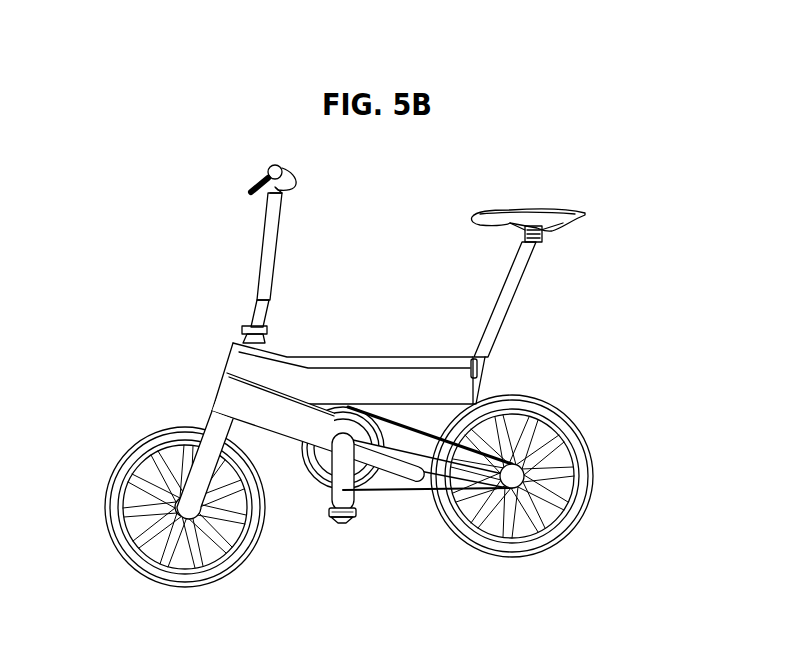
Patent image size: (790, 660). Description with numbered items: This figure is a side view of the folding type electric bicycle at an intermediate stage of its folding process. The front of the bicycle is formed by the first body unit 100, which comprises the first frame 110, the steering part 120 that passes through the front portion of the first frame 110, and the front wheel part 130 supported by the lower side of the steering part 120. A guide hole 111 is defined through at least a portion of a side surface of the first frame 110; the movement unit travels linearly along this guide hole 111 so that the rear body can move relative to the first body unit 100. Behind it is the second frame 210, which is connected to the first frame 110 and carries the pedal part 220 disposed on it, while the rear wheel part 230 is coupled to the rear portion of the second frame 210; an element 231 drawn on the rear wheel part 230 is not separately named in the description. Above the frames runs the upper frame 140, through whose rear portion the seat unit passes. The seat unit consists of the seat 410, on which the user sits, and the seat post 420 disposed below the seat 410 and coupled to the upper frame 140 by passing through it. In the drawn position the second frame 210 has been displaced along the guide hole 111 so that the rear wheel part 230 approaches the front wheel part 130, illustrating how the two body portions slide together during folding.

The first body unit 100 is at (592, 206).
The first frame 110 is at (232, 397).
The guide hole 111 is at (378, 493).
The steering part 120 is at (256, 251).
The front wheel part 130 is at (141, 445).
The upper frame 140 is at (242, 354).
The second frame 210 is at (412, 457).
The pedal part 220 is at (341, 527).
The rear wheel part 230 is at (586, 517).
The rear tire 231 is at (555, 412).
The seat 410 is at (560, 224).
The seat post 420 is at (508, 293).